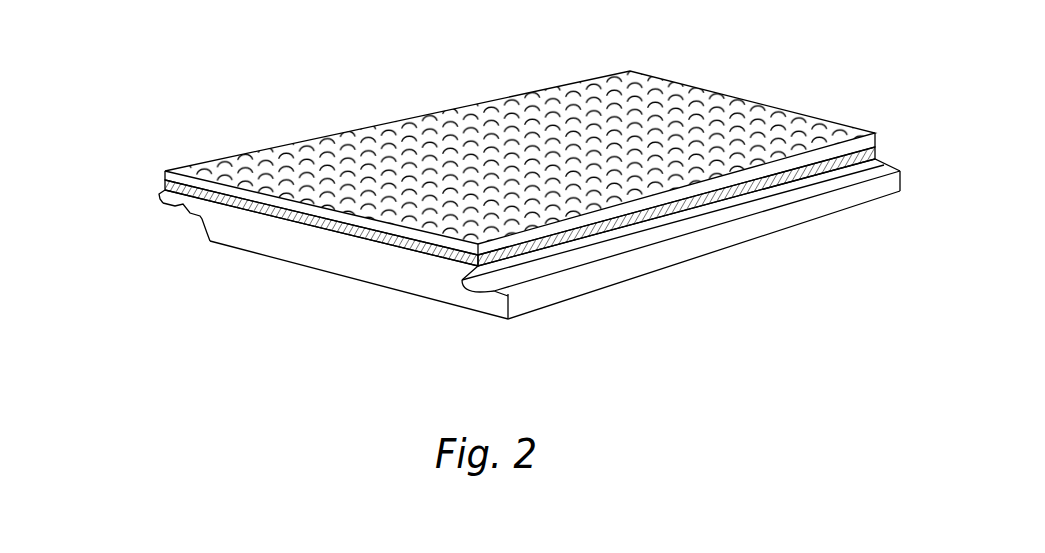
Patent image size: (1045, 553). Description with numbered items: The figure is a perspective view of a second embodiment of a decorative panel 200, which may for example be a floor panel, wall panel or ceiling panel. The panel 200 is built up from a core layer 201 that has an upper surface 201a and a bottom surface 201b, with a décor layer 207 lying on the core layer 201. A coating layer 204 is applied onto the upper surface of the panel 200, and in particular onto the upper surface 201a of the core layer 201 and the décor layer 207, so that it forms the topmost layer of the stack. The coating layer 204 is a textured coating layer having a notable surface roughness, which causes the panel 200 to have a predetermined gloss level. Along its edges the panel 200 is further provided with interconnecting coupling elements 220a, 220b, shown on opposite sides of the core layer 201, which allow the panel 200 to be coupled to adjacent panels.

The decorative panel 200 is at (138, 146).
The coating layer 204 is at (474, 113).
The décor layer 207 is at (200, 218).
The core layer 201 is at (380, 267).
The upper surface 201a is at (291, 230).
The bottom surface 201b is at (438, 306).
The interconnecting coupling element 220a is at (167, 192).
The interconnecting coupling element 220b is at (660, 261).